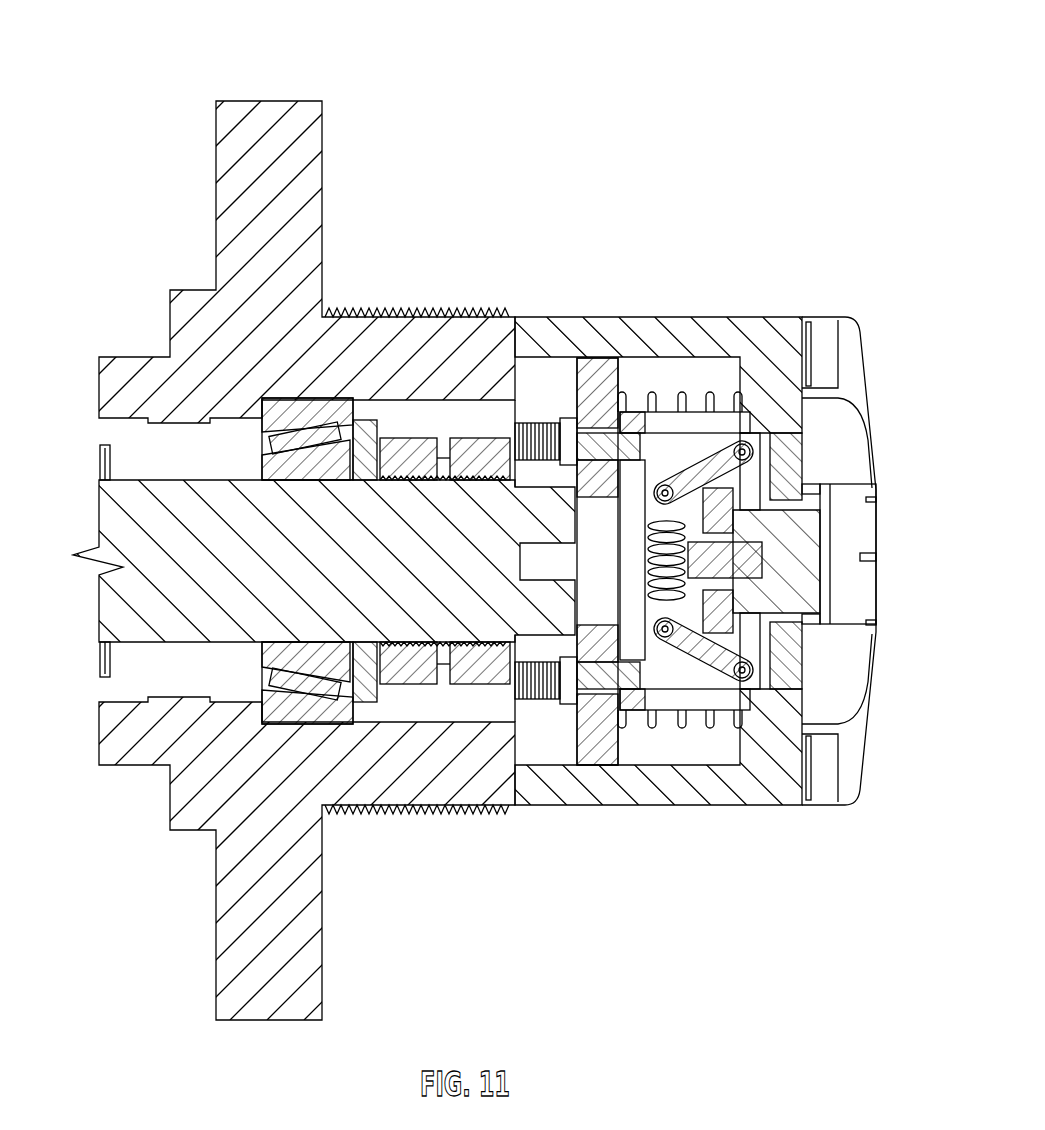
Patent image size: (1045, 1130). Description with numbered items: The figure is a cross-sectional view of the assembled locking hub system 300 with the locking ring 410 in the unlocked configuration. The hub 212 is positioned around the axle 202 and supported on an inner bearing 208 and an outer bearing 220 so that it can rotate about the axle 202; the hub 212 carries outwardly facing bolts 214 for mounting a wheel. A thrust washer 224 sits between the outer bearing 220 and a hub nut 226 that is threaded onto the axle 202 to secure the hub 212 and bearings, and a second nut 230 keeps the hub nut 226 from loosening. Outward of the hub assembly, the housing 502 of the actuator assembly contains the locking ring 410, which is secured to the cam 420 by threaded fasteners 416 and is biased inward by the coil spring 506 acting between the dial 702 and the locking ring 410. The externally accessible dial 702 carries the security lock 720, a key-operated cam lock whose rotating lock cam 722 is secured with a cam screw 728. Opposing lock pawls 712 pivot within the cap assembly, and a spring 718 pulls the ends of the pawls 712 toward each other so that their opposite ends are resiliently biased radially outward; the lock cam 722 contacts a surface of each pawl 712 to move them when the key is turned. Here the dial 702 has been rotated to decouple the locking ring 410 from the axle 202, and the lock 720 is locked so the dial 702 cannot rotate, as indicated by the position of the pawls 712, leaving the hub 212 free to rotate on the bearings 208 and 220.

The locking hub system 300 is at (160, 36).
The axle 202 is at (122, 618).
The inner bearing 208 is at (108, 462).
The hub 212 is at (265, 112).
The bolts 214 is at (380, 303).
The outer bearing 220 is at (300, 658).
The thrust washer 224 is at (290, 722).
The hub nut 226 is at (410, 668).
The second nut 230 is at (497, 665).
The locking ring 410 is at (590, 358).
The threaded fasteners 416 is at (598, 692).
The cam 420 is at (710, 398).
The housing 502 is at (608, 335).
The coil spring 506 is at (655, 742).
The dial 702 is at (868, 352).
The lock pawls 712 is at (728, 470).
The spring 718 is at (648, 580).
The security lock 720 is at (815, 548).
The rotating cam 722 is at (795, 490).
The cam screw 728 is at (770, 578).